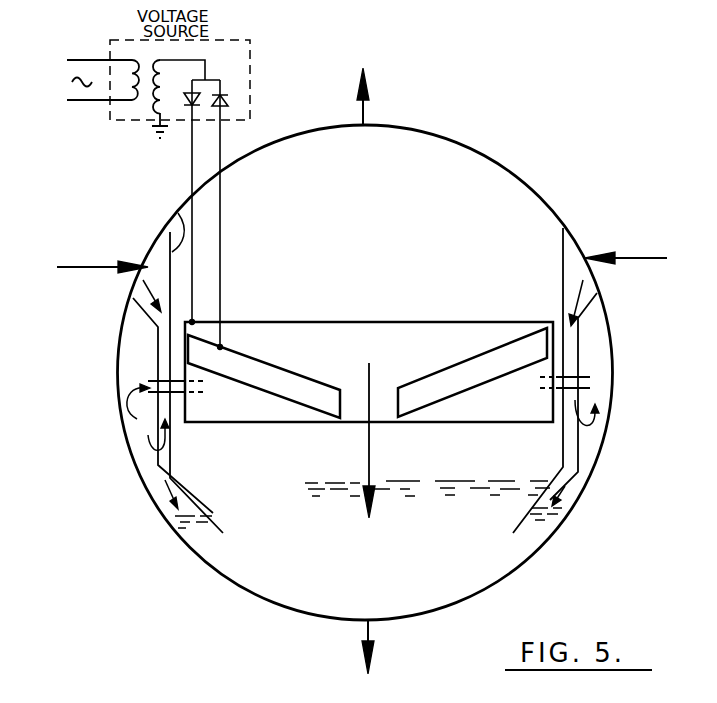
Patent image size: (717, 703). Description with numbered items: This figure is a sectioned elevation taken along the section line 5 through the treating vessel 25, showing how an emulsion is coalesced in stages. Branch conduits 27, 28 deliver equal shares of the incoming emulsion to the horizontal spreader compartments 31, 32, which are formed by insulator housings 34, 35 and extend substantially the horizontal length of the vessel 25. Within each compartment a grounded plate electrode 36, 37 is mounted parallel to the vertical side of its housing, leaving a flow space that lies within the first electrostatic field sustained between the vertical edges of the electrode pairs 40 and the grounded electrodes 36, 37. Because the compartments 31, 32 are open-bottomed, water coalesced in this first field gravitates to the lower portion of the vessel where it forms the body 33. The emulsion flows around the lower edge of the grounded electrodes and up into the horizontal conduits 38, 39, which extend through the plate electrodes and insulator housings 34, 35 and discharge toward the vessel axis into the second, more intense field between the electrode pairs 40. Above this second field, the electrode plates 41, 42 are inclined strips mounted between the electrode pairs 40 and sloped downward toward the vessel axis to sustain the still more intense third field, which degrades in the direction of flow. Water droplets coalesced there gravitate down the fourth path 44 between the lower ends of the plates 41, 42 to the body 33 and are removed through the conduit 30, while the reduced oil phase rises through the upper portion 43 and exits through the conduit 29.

The section line 5 is at (262, 0).
The vessel 25 is at (522, 563).
The branch conduit 27 is at (85, 267).
The branch conduit 28 is at (636, 258).
The conduit 29 is at (365, 113).
The conduit 30 is at (369, 640).
The spreader compartment 31 is at (138, 345).
The spreader compartment 32 is at (588, 345).
The body 33 is at (288, 587).
The insulator housing 34 is at (178, 213).
The insulator housing 35 is at (563, 282).
The grounded electrode 36 is at (160, 365).
The grounded electrode 37 is at (583, 363).
The horizontal conduit 38 is at (178, 393).
The horizontal conduit 39 is at (557, 428).
The electrode pairs 40 is at (268, 423).
The electrode plate 41 is at (295, 370).
The electrode plate 42 is at (457, 362).
The upper portion 43 is at (359, 220).
The path 44 is at (369, 450).